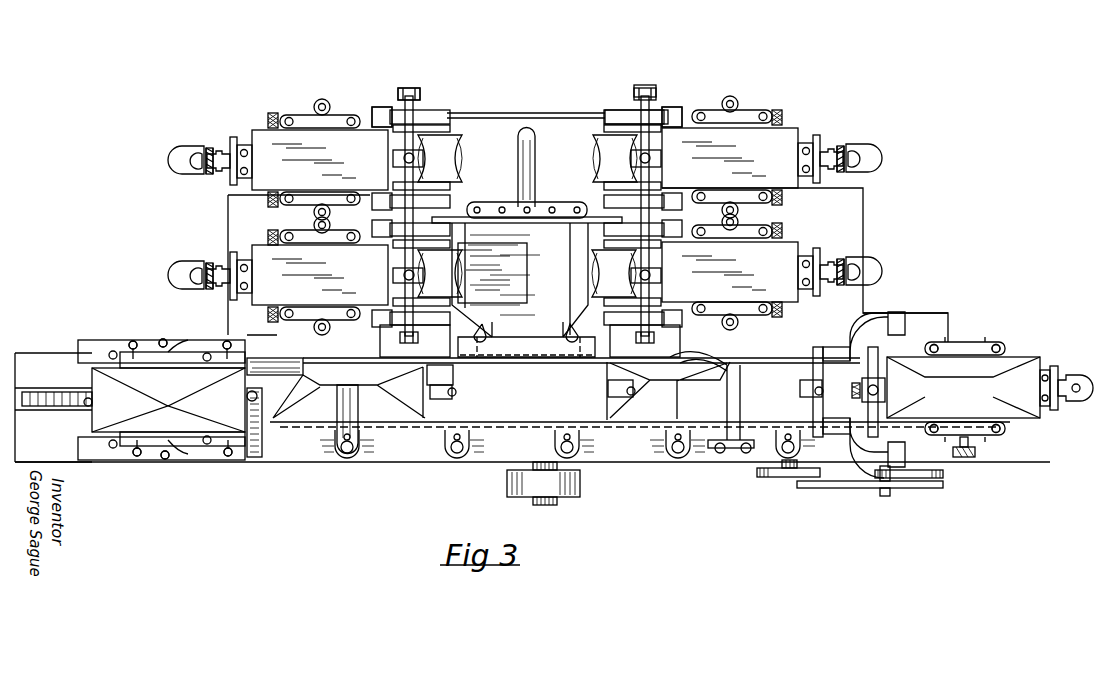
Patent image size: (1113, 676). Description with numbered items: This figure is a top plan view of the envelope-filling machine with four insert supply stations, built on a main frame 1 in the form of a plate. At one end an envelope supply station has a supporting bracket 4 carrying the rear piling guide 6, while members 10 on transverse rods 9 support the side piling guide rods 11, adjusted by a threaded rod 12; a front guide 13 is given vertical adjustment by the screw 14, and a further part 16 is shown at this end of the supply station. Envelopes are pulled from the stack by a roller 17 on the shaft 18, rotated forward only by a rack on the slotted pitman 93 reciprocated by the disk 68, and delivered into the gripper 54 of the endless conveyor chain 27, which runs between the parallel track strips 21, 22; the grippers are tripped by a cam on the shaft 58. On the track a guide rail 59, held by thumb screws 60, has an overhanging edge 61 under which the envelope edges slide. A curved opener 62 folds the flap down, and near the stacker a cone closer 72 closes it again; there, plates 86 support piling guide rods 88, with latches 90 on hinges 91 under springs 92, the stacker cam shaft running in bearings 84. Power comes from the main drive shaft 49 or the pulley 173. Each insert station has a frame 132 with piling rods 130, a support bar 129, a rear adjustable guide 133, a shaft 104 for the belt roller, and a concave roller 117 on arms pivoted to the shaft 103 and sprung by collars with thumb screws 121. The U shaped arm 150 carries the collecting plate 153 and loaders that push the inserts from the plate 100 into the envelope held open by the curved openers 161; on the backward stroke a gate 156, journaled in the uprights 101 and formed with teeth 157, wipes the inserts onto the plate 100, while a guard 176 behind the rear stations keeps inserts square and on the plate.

The main frame 1 is at (228, 222).
The supporting bracket 4 is at (872, 320).
The rear piling guide 6 is at (1045, 367).
The transverse rods 9 is at (88, 402).
The members 10 is at (962, 344).
The side piling guide rods 11 is at (934, 342).
The threaded rod 12 is at (968, 458).
The guide 13 is at (882, 388).
The screw 14 is at (852, 384).
The eye 16 is at (1058, 392).
The roller 17 is at (902, 438).
The shaft 18 is at (916, 480).
The track strip 21 is at (52, 458).
The track strip 22 is at (40, 346).
The conveyor chain 27 is at (44, 390).
The main drive shaft 49 is at (544, 497).
The gripper 54 is at (257, 454).
The shaft 58 is at (792, 476).
The guide rail 59 is at (388, 462).
The thumb screws 60 is at (348, 460).
The overhanging edge 61 is at (468, 462).
The opener 62 is at (718, 356).
The wheel 68 is at (768, 478).
The closer 72 is at (290, 356).
The bearings 84 is at (100, 444).
The plate 86 is at (98, 342).
The piling guide rods 88 is at (116, 352).
The latches 90 is at (192, 344).
The hinges 91 is at (154, 458).
The springs 92 is at (170, 344).
The slotted pitman 93 is at (854, 486).
The plate 100 is at (440, 338).
The uprights 101 is at (372, 110).
The shaft 103 is at (390, 108).
The shaft 104 is at (682, 116).
The concave roller 117 is at (450, 158).
The thumb screws 121 is at (408, 88).
The support bar 129 is at (268, 114).
The piling rods 130 is at (776, 110).
The frame 132 is at (306, 114).
The rear adjustable guide 133 is at (238, 177).
The U shaped arm 150 is at (518, 132).
The collecting plate 153 is at (527, 249).
The gate 156 is at (554, 212).
The teeth 157 is at (558, 322).
The curved openers 161 is at (552, 344).
The pulley 173 is at (512, 497).
The guard 176 is at (550, 113).